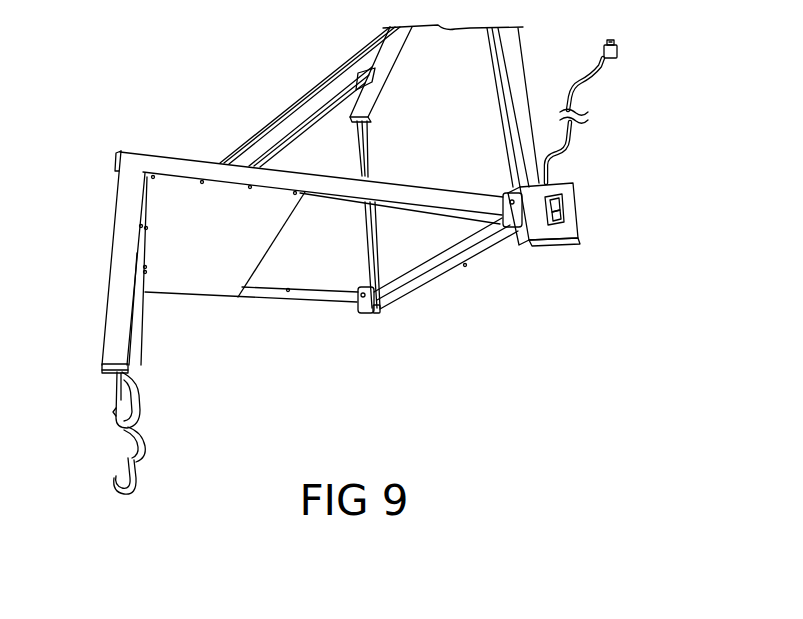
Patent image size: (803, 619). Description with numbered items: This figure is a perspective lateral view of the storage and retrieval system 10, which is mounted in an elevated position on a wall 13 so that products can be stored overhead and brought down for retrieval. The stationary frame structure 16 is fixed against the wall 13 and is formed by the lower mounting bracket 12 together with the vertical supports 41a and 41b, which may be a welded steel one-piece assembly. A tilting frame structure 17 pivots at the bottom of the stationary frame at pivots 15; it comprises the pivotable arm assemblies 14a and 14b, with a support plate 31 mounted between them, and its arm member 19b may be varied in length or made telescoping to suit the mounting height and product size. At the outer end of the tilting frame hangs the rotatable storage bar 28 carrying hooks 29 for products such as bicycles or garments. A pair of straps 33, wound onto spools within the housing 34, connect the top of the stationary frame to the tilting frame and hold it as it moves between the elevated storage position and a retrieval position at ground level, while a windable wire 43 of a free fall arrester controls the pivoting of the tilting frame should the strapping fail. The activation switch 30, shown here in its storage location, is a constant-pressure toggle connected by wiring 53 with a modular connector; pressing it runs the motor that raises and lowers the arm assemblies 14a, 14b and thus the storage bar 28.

The storage and retrieval system 10 is at (213, 103).
The lower mounting bracket 12 is at (390, 288).
The wall 13 is at (331, 274).
The pivotable arm assembly 14a is at (263, 303).
The pivotable arm assembly 14b is at (332, 207).
The pivot 15 is at (363, 296).
The stationary frame structure 16 is at (450, 283).
The tilting frame structure 17 is at (172, 145).
The arm member 19b is at (110, 265).
The rotatable storage bar 28 is at (135, 378).
The hooks 29 is at (140, 473).
The activation switch 30 is at (578, 195).
The support plate 31 is at (172, 283).
The straps 33 is at (282, 112).
The housing 34 is at (395, 48).
The vertical support 41a is at (363, 155).
The vertical support 41b is at (502, 72).
The windable wire 43 is at (342, 88).
The wiring 53 is at (600, 78).